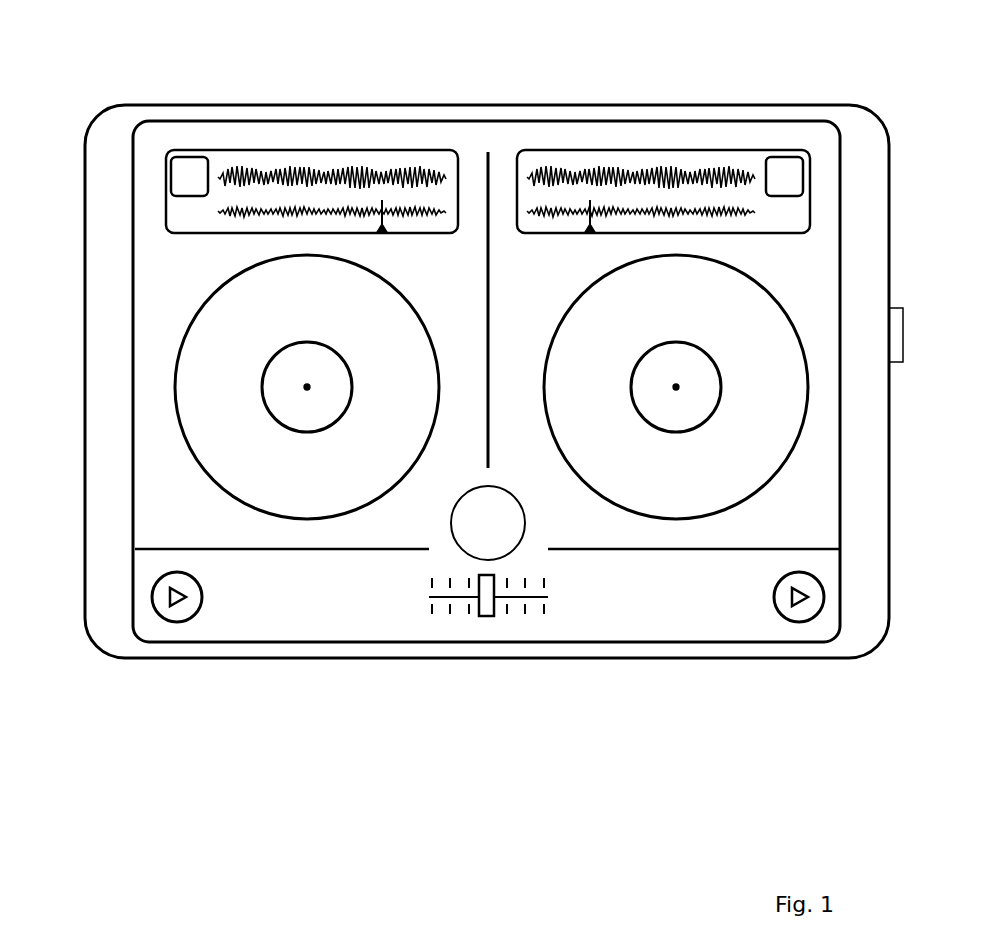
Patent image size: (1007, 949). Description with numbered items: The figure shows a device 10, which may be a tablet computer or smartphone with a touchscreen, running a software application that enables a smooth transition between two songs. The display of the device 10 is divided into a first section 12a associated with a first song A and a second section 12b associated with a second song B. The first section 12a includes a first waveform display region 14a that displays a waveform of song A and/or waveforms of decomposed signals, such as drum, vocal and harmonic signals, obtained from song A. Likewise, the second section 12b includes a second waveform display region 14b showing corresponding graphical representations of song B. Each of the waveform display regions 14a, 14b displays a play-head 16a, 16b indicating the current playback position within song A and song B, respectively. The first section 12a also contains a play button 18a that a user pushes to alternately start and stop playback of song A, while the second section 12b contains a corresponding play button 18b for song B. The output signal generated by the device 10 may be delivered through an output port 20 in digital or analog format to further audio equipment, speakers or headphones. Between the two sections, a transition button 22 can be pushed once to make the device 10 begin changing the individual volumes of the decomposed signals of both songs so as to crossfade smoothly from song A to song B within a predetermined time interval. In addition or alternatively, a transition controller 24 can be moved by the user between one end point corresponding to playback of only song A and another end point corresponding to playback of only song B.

The device 10 is at (200, 98).
The first section 12a is at (172, 271).
The second section 12b is at (822, 262).
The first waveform display region 14a is at (213, 160).
The second waveform display region 14b is at (556, 160).
The play-head 16a is at (385, 222).
The play-head 16b is at (590, 232).
The play button 18a is at (177, 610).
The play button 18b is at (801, 610).
The output port 20 is at (905, 357).
The transition button 22 is at (463, 508).
The transition controller 24 is at (487, 610).